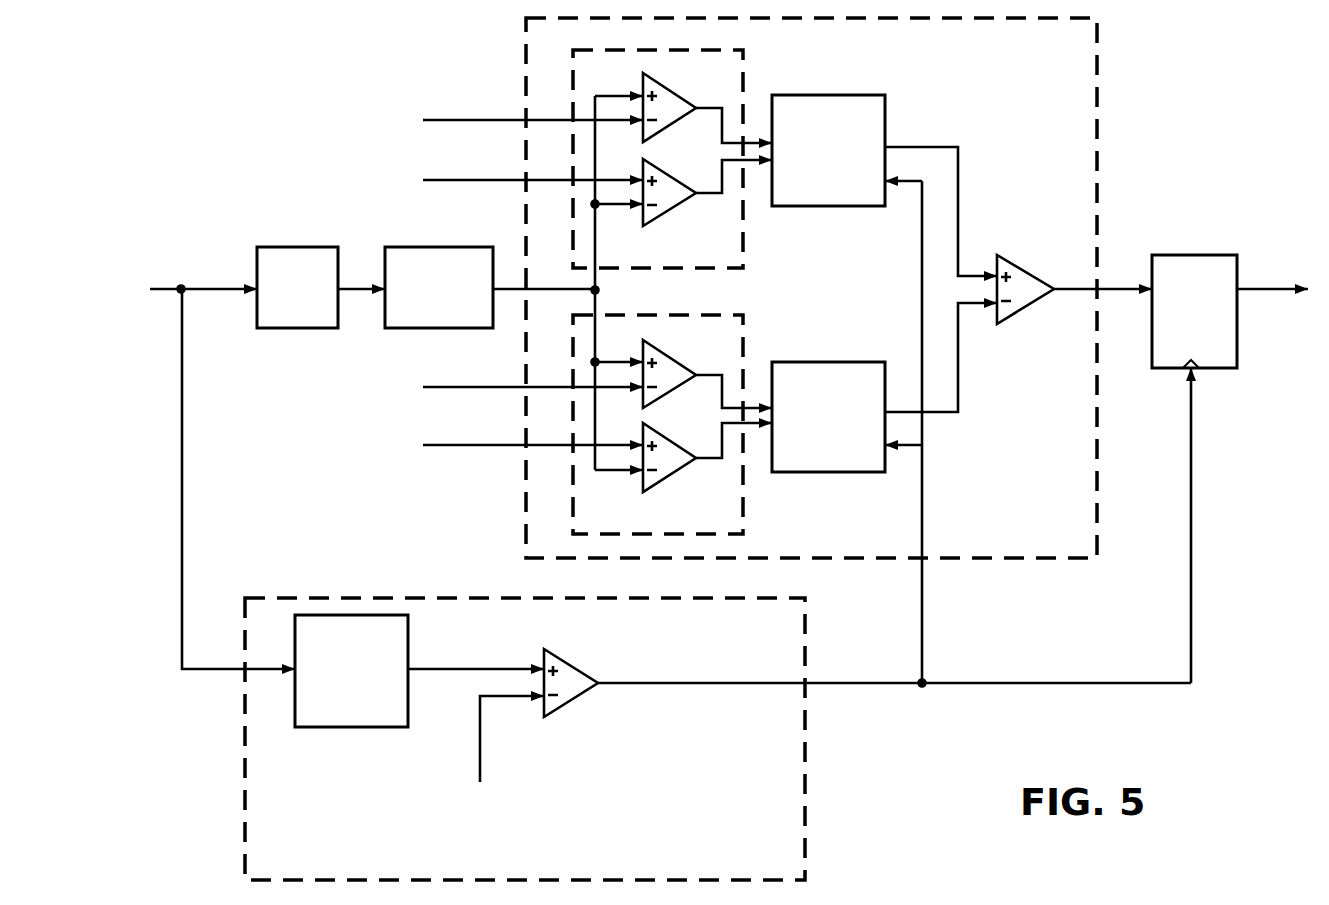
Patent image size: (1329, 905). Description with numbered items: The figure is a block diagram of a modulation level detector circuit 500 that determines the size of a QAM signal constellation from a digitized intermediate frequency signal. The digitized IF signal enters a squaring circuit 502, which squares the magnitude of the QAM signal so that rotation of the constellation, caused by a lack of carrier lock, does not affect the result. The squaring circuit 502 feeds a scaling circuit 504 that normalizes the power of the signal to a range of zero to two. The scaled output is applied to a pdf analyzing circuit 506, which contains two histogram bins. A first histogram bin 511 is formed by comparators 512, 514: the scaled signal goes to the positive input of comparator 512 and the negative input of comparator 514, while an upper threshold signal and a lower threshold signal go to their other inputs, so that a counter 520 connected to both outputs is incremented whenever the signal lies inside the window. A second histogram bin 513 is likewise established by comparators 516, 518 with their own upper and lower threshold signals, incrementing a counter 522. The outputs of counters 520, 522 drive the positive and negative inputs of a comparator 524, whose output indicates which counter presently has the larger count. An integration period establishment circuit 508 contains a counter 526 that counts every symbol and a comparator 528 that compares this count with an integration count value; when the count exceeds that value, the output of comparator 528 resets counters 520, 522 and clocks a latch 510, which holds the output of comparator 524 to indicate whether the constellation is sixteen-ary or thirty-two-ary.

The modulation level detector circuit 500 is at (688, 449).
The squaring circuit 502 is at (255, 310).
The scaling circuit 504 is at (432, 328).
The pdf analyzing circuit 506 is at (1037, 560).
The integration period establishment circuit 508 is at (807, 812).
The latch 510 is at (1237, 338).
The first histogram bin 511 is at (743, 72).
The comparator 512 is at (672, 92).
The second histogram bin 513 is at (743, 333).
The comparator 514 is at (677, 200).
The comparator 516 is at (673, 362).
The comparator 518 is at (677, 467).
The counter 520 is at (847, 206).
The counter 522 is at (847, 472).
The comparator 524 is at (1032, 298).
The counter 526 is at (343, 727).
The comparator 528 is at (580, 695).